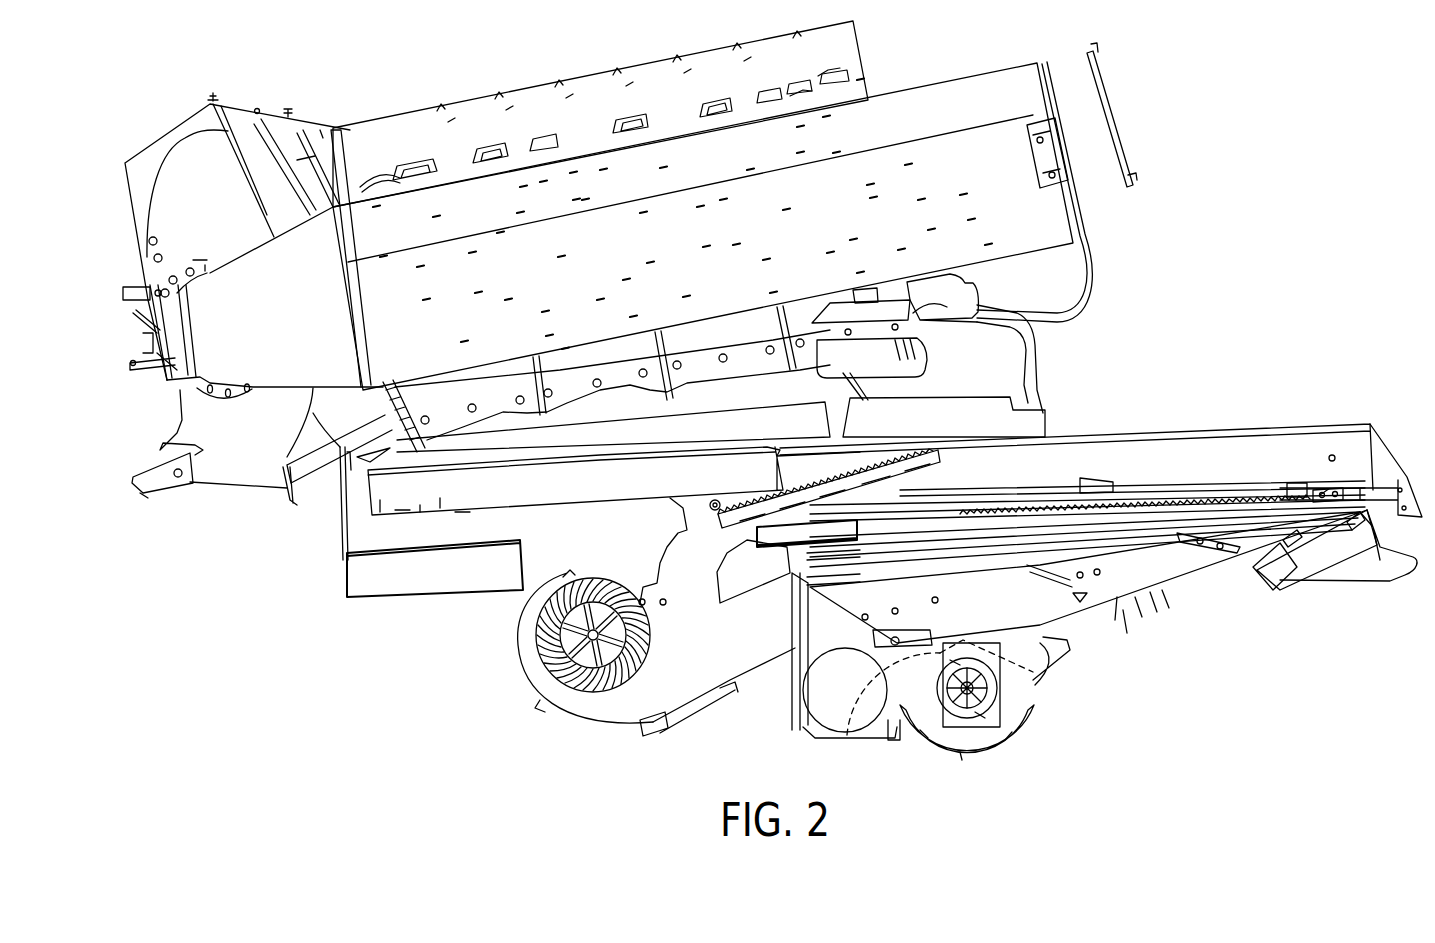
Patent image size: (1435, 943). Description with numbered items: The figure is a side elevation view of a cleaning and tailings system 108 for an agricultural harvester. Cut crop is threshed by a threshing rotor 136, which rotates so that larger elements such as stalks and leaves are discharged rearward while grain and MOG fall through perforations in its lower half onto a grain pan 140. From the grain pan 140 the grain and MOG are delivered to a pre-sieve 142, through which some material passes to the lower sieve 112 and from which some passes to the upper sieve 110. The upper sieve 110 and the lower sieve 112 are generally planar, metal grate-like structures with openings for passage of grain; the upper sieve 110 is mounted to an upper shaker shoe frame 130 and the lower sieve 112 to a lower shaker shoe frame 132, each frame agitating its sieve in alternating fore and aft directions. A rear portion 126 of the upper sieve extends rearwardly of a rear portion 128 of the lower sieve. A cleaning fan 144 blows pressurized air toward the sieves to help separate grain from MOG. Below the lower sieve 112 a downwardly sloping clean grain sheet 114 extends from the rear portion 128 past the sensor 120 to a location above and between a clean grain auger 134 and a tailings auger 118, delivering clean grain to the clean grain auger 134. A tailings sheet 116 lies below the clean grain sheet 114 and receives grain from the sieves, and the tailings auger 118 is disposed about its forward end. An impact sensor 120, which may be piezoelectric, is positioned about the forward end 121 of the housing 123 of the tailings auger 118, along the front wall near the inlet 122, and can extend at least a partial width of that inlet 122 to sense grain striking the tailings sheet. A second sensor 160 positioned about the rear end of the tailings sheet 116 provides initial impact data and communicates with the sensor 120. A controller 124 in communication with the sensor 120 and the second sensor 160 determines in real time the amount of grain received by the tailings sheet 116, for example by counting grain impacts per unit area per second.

The cleaning and tailings system 108 is at (1186, 213).
The upper sieve 110 is at (1178, 478).
The lower sieve 112 is at (1050, 533).
The clean grain sheet 114 is at (1117, 580).
The tailings sheet 116 is at (1173, 590).
The tailings auger 118 is at (1002, 713).
The sensor 120 is at (1033, 672).
The forward end 121 is at (895, 730).
The inlet 122 is at (1017, 693).
The housing 123 is at (973, 733).
The controller 124 is at (845, 736).
The rear portion 126 is at (1283, 487).
The rear portion 128 is at (1183, 533).
The upper shaker shoe frame 130 is at (1237, 483).
The lower shaker shoe frame 132 is at (1030, 567).
The clean grain auger 134 is at (797, 710).
The threshing rotor 136 is at (948, 78).
The grain pan 140 is at (615, 438).
The pre-sieve 142 is at (863, 467).
The cleaning fan 144 is at (582, 680).
The second sensor 160 is at (1300, 547).